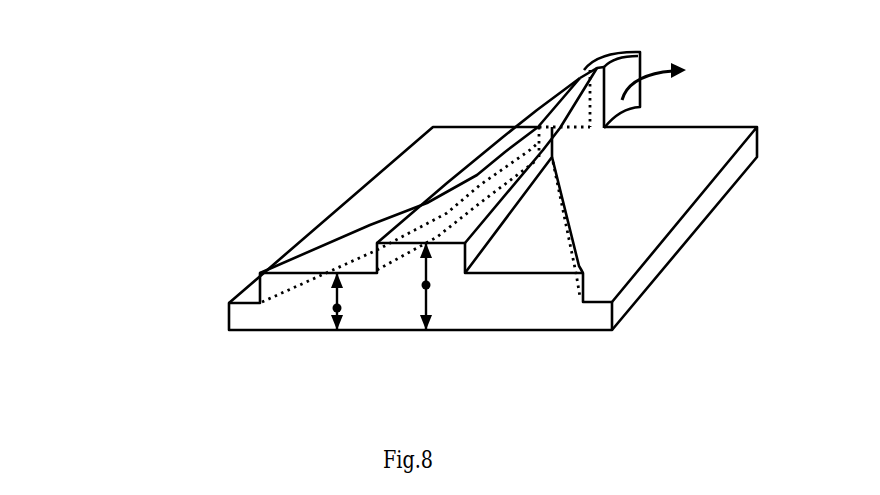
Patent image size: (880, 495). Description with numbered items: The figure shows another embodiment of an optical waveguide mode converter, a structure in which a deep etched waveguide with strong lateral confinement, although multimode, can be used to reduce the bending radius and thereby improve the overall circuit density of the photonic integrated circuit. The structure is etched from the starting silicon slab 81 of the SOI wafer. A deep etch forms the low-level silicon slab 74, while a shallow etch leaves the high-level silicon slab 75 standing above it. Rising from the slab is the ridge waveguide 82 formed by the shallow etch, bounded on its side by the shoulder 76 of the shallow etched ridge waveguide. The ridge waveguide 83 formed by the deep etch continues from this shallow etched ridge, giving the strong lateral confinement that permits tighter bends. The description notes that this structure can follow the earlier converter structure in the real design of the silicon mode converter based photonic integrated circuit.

The low-level silicon slab 74 is at (630, 308).
The high-level silicon slab 75 is at (337, 308).
The shoulder of the shallow etched ridge waveguide 76 is at (545, 223).
The starting silicon slab of the SOI wafer 81 is at (426, 285).
The ridge waveguide formed by shallow etch 82 is at (450, 217).
The ridge waveguide formed by deep etch 83 is at (580, 83).